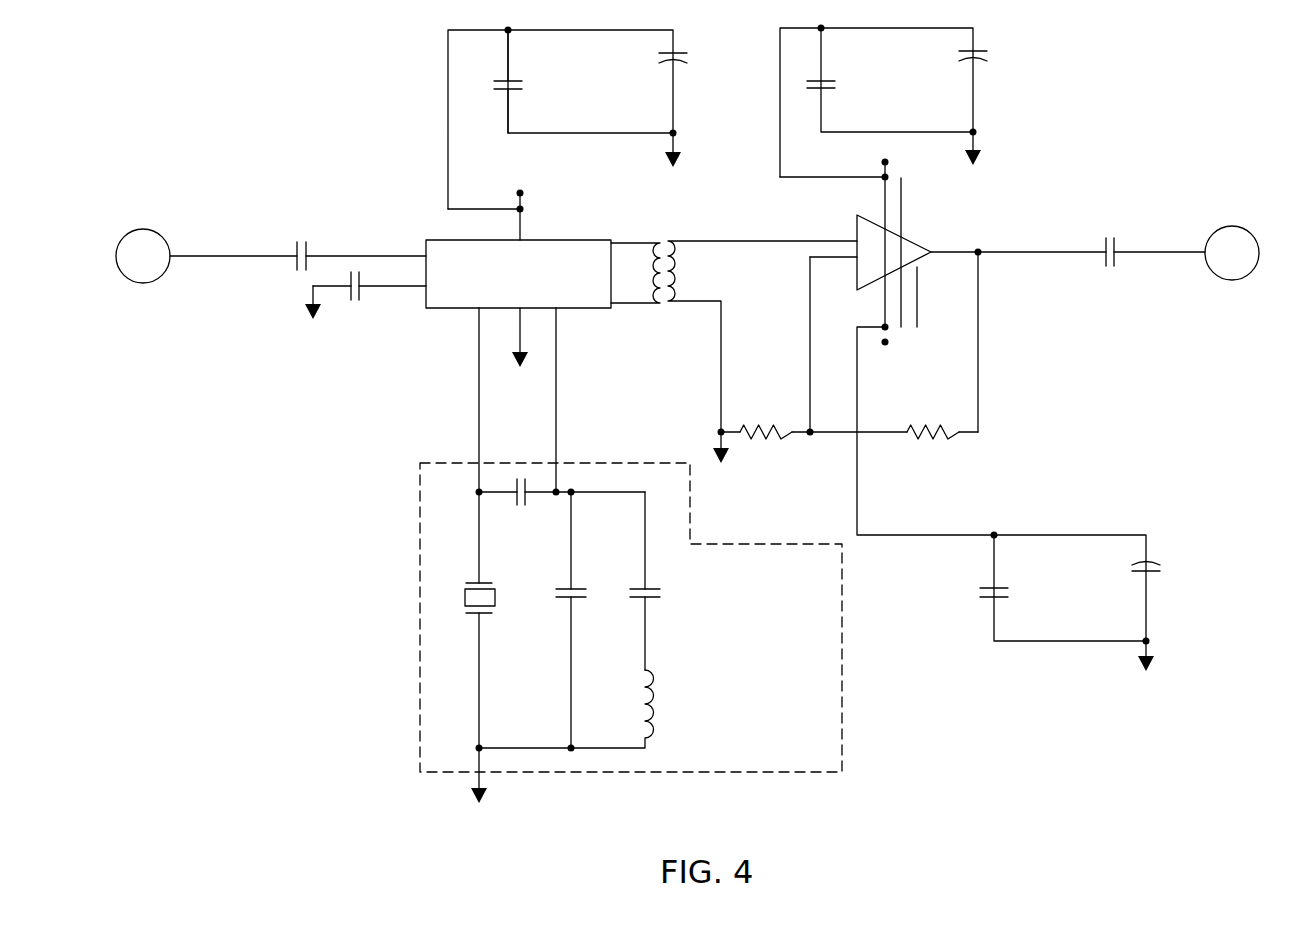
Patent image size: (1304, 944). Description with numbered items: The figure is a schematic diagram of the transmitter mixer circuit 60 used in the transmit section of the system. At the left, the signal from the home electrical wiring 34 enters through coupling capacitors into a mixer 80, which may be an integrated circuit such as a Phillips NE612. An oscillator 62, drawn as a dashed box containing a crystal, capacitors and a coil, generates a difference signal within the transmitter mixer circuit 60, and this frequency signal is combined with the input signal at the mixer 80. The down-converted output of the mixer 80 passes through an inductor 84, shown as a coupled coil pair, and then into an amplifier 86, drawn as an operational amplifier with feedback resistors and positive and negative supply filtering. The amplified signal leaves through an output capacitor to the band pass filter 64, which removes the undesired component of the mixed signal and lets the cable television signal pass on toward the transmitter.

The home electrical wiring 34 is at (162, 228).
The transmitter mixer circuit 60 is at (1064, 697).
The oscillator 62 is at (832, 757).
The band pass filter 64 is at (1226, 280).
The mixer 80 is at (543, 247).
The inductor 84 is at (663, 252).
The amplifier 86 is at (900, 250).